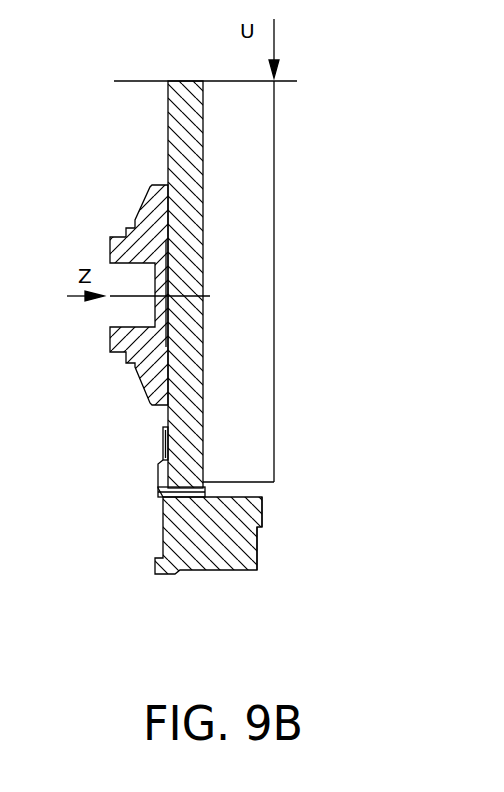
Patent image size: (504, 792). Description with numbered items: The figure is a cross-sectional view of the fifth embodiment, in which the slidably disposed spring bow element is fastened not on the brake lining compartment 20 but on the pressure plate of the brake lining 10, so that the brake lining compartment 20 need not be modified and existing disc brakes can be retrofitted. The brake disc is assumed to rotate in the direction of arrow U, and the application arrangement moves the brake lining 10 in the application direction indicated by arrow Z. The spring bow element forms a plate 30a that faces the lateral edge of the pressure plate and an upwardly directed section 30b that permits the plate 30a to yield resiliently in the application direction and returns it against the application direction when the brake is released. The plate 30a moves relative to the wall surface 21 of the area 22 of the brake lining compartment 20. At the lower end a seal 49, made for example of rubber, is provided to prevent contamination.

The brake lining 10 is at (298, 205).
The brake lining compartment 20 is at (286, 581).
The wall surface 21 is at (262, 525).
The area of the brake lining compartment 22 is at (210, 557).
The plate 30a is at (163, 517).
The section 30b is at (152, 484).
The seal 49 is at (205, 490).